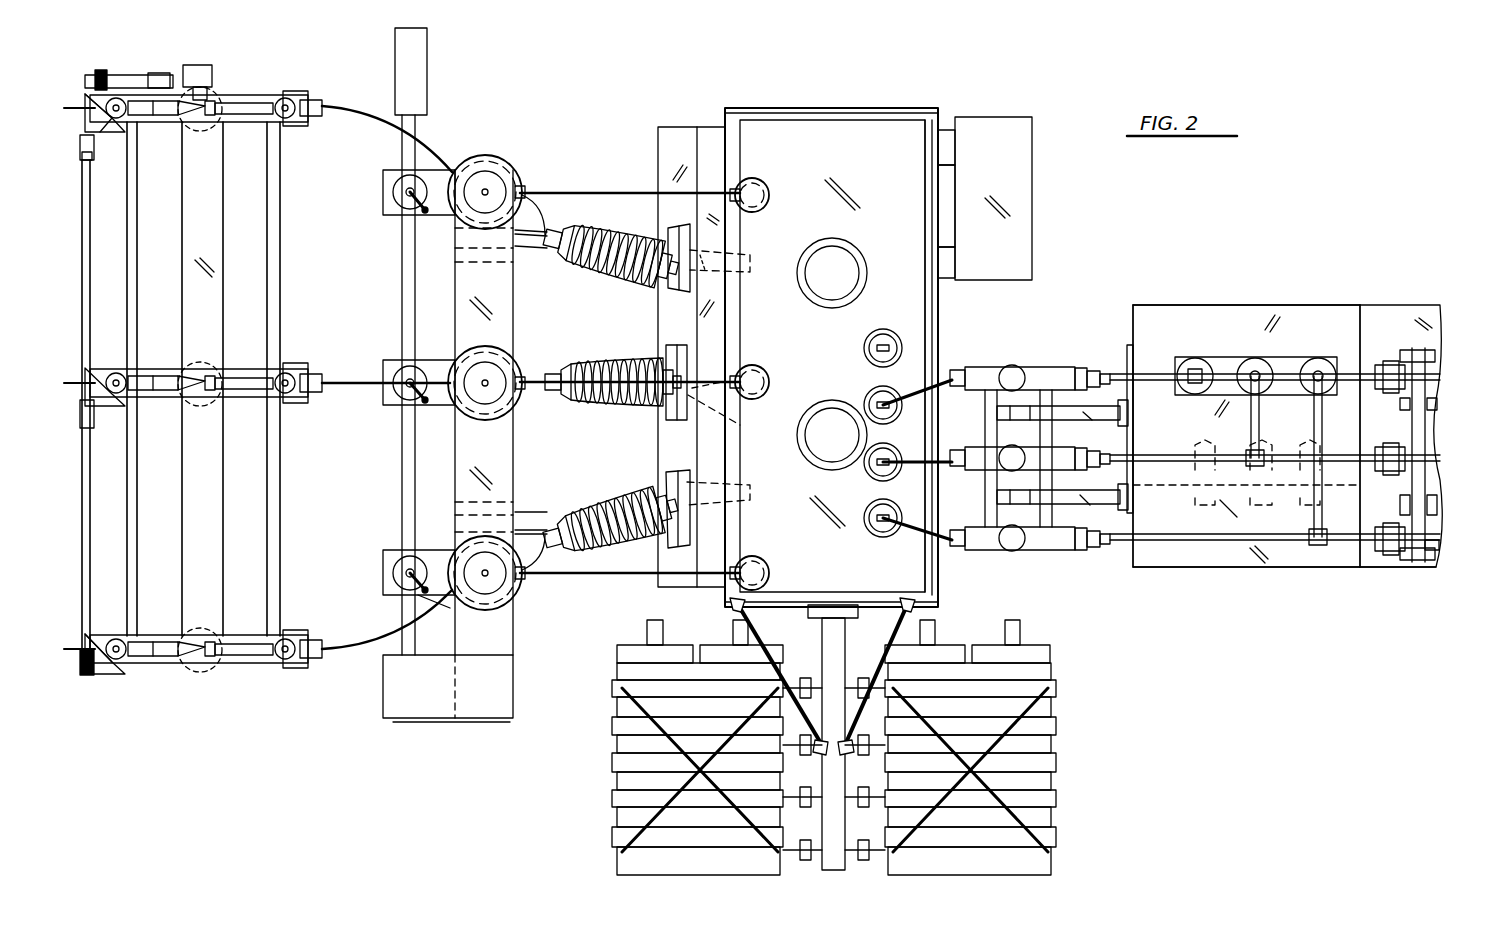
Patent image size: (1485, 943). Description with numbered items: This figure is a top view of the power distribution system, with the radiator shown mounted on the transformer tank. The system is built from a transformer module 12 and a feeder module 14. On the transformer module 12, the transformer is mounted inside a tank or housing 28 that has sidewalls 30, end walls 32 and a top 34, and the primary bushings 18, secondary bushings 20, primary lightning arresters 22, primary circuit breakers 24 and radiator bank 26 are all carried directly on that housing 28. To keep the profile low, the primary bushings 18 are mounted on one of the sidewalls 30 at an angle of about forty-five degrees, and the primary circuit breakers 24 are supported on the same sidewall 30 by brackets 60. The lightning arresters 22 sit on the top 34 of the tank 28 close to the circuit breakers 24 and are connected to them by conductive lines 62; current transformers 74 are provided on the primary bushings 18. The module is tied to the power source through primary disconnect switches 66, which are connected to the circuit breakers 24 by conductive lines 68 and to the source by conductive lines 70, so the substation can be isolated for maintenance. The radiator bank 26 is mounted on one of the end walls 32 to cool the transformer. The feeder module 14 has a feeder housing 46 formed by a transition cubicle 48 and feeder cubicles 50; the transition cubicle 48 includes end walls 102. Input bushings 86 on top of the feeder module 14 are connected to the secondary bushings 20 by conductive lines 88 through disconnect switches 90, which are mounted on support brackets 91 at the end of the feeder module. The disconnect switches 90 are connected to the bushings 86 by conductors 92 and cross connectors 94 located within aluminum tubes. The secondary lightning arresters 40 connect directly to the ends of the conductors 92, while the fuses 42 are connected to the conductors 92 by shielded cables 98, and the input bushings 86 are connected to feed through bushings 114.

The transformer module 12 is at (832, 102).
The feeder module 14 is at (1310, 298).
The primary bushings 18 is at (625, 268).
The secondary bushings 20 is at (875, 362).
The primary lightning arresters 22 is at (767, 187).
The primary circuit breakers 24 is at (520, 178).
The radiator bank 26 is at (788, 880).
The transformer tank or housing 28 is at (935, 340).
The sidewalls 30 is at (725, 118).
The end walls 32 is at (896, 108).
The top 34 is at (925, 298).
The secondary lightning arresters 40 is at (1390, 362).
The fuses 42 is at (1432, 350).
The feeder housing 46 is at (1256, 578).
The transition compartment or cubicle 48 is at (1310, 568).
The feeder compartments or cubicles 50 is at (1410, 572).
The brackets 60 is at (530, 250).
The conductive lines 62 is at (595, 192).
The primary disconnect switches 66 is at (210, 118).
The conductive lines 68 is at (372, 118).
The conductive lines 70 is at (80, 105).
The current transformers 74 is at (735, 243).
The input bushings 86 is at (1208, 360).
The conductive lines 88 is at (910, 398).
The disconnect switches 90 is at (1032, 372).
The support brackets 91 is at (1050, 500).
The conductors 92 is at (1160, 382).
The cross connectors 94 is at (1262, 418).
The shielded cables 98 is at (1415, 358).
The end walls 102 is at (1133, 312).
The feed through bushings 114 is at (1240, 500).